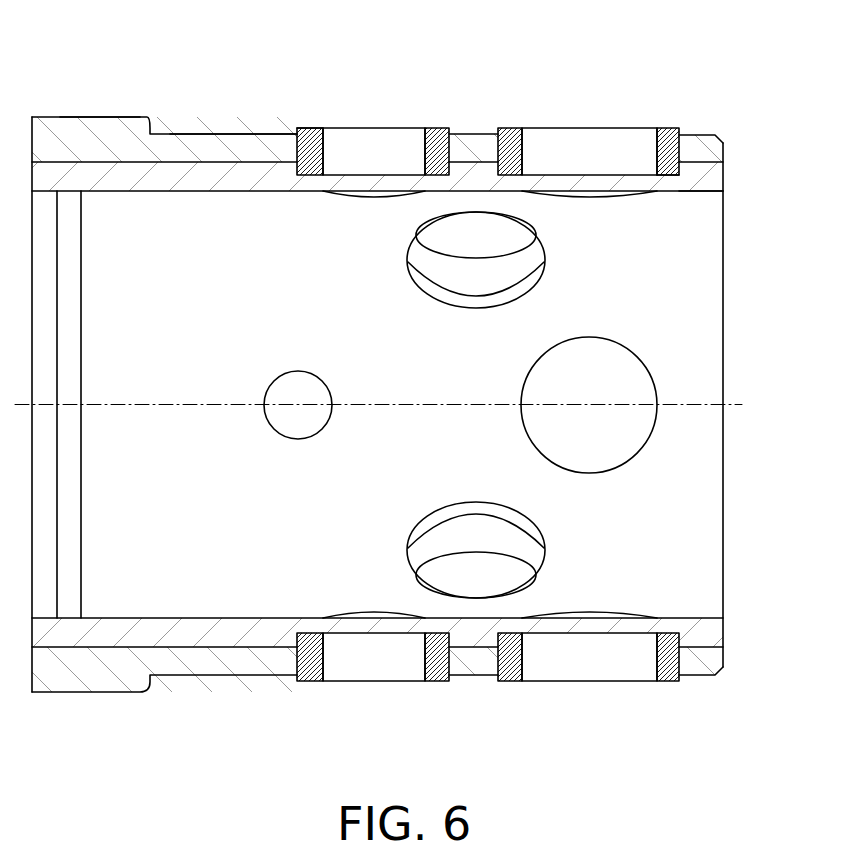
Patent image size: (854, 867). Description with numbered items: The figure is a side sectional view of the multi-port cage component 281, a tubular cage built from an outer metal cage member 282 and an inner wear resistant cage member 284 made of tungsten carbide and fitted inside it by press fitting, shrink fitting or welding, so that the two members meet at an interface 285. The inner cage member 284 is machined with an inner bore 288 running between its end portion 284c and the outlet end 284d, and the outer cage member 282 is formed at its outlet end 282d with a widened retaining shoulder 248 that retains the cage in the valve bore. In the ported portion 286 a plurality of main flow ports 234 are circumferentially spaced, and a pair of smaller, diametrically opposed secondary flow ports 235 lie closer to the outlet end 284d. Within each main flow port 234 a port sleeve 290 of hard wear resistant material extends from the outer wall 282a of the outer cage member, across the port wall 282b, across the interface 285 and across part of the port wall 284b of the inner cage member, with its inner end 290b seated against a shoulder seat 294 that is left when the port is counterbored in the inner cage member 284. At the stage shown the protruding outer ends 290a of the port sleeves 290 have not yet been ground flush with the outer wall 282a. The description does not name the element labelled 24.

The manifold body 24 is at (740, 403).
The main flow ports 234 is at (378, 191).
The secondary flow ports 235 is at (292, 428).
The widened retaining shoulder 248 is at (118, 117).
The multi-port cage component 281 is at (316, 106).
The outer metal cage member 282 is at (66, 695).
The outer wall of outer cage member 282a is at (220, 150).
The port wall of outer cage member 282b is at (483, 148).
The outlet end of outer cage member 282d is at (30, 145).
The inner wear resistant cage member 284 is at (158, 628).
The port wall of inner cage member 284b is at (658, 178).
The end portion of inner cage member 284c is at (708, 185).
The outlet end 284d is at (32, 180).
The interface between outer and inner cage members 285 is at (726, 162).
The ported portion 286 is at (207, 628).
The inner bore 288 is at (216, 192).
The port sleeves 290 is at (434, 140).
The protruding outer ends of port sleeves 290a is at (668, 128).
The inner end of port sleeve 290b is at (672, 180).
The shoulder seat 294 is at (315, 186).